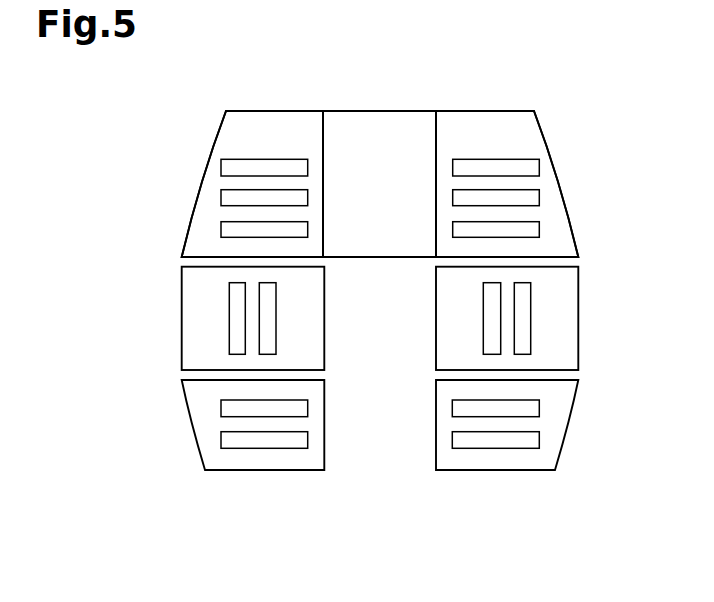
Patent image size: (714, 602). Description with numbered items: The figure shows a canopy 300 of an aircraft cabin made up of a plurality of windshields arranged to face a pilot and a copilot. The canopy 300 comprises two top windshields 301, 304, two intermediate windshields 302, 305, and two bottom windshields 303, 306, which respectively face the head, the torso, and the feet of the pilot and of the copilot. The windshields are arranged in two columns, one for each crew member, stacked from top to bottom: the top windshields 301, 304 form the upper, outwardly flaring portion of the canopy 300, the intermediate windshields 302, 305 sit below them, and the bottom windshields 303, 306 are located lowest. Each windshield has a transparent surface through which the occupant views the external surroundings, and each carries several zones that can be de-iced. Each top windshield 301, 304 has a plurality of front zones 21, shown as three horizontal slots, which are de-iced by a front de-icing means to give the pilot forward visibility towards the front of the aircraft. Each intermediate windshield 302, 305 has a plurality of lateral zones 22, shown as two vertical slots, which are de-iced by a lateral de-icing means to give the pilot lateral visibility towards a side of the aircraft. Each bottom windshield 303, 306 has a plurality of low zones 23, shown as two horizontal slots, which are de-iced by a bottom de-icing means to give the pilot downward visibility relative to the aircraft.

The canopy 300 is at (572, 84).
The top windshield 301 is at (273, 127).
The intermediate windshield 302 is at (189, 289).
The bottom windshield 303 is at (210, 458).
The top windshield 304 is at (487, 125).
The intermediate windshield 305 is at (572, 290).
The bottom windshield 306 is at (550, 457).
The front zone 21 is at (228, 229).
The lateral zone 22 is at (269, 328).
The low zone 23 is at (260, 408).